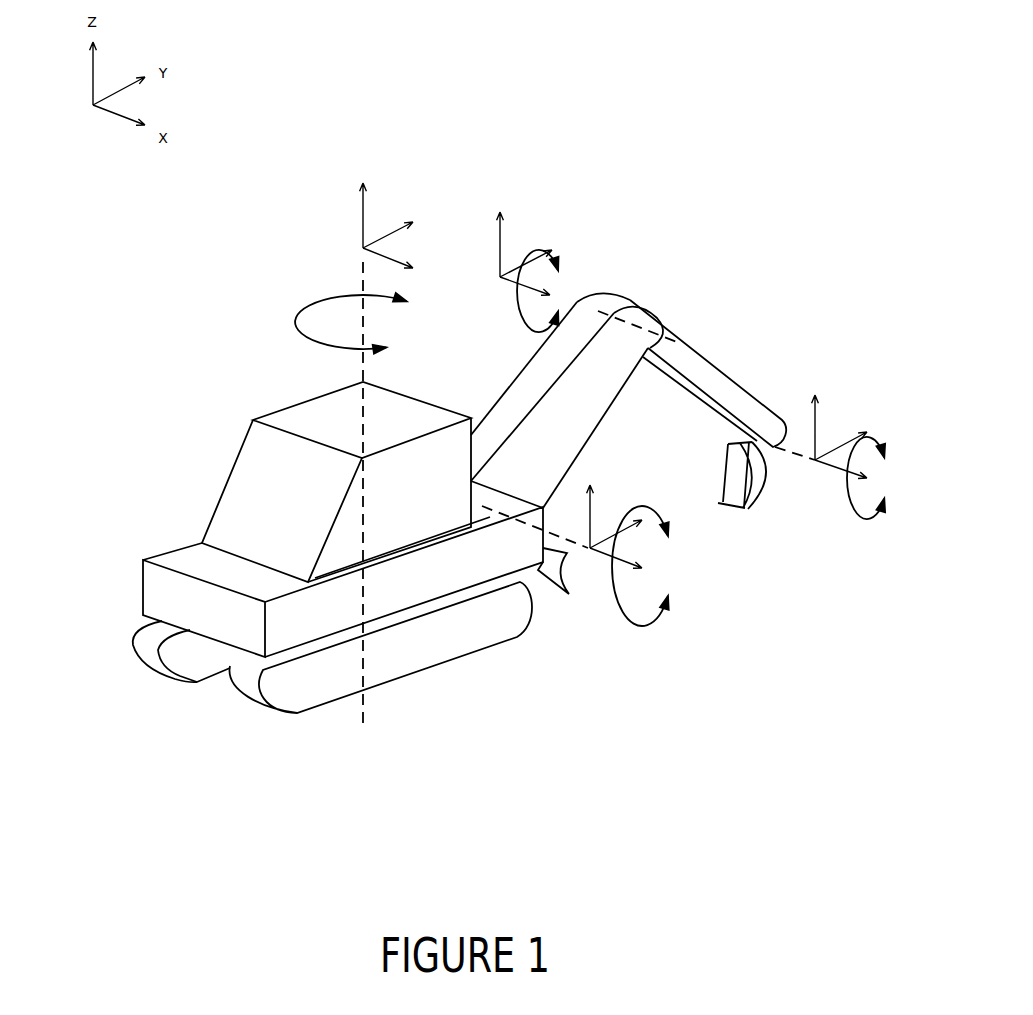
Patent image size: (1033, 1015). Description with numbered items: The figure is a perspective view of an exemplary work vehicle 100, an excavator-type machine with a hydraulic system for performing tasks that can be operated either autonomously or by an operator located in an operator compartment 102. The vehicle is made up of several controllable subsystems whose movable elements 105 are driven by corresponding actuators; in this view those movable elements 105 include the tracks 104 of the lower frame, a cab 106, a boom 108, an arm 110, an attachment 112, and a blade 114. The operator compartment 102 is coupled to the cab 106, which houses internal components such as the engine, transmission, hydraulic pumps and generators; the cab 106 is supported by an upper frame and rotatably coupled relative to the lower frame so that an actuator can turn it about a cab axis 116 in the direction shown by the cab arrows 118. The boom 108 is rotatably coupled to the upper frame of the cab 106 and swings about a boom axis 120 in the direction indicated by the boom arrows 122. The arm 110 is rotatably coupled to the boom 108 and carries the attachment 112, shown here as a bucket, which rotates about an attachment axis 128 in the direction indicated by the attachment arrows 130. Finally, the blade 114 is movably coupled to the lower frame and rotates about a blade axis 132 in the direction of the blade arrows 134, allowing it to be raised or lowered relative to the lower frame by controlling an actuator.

The work vehicle 100 is at (105, 215).
The operator compartment 102 is at (228, 480).
The tracks 104 is at (242, 682).
The movable elements 105 is at (721, 284).
The cab 106 is at (172, 610).
The boom 108 is at (548, 368).
The arm 110 is at (718, 378).
The attachment 112 is at (765, 495).
The blade 114 is at (542, 585).
The cab axis 116 is at (365, 215).
The cab arrows 118 is at (310, 303).
The boom axis 120 is at (545, 288).
The boom arrows 122 is at (542, 252).
The attachment axis 128 is at (838, 470).
The attachment arrows 130 is at (874, 440).
The blade axis 132 is at (600, 555).
The blade arrows 134 is at (662, 612).